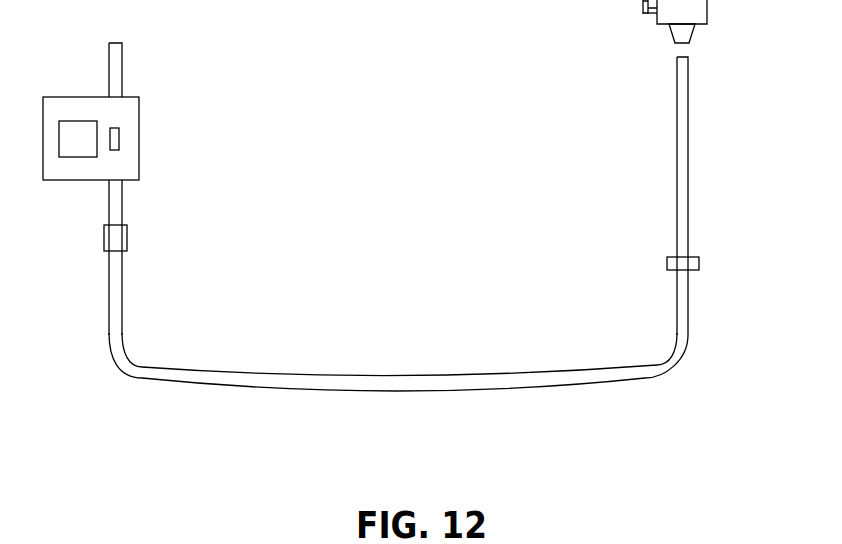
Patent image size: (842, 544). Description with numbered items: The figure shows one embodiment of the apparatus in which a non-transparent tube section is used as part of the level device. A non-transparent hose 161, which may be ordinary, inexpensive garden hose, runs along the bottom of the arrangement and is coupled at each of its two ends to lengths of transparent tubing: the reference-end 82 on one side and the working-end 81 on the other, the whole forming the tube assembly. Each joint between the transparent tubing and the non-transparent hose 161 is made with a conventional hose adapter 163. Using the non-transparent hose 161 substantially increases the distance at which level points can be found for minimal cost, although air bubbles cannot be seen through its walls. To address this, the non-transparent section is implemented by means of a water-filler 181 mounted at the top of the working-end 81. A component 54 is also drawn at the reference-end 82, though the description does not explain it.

The reference-end 82 is at (115, 60).
The connector box 54 is at (123, 112).
The hose adapters 163 is at (117, 233).
The working-end 81 is at (683, 128).
The water-filler 181 is at (707, 9).
The non-transparent hose 161 is at (392, 389).